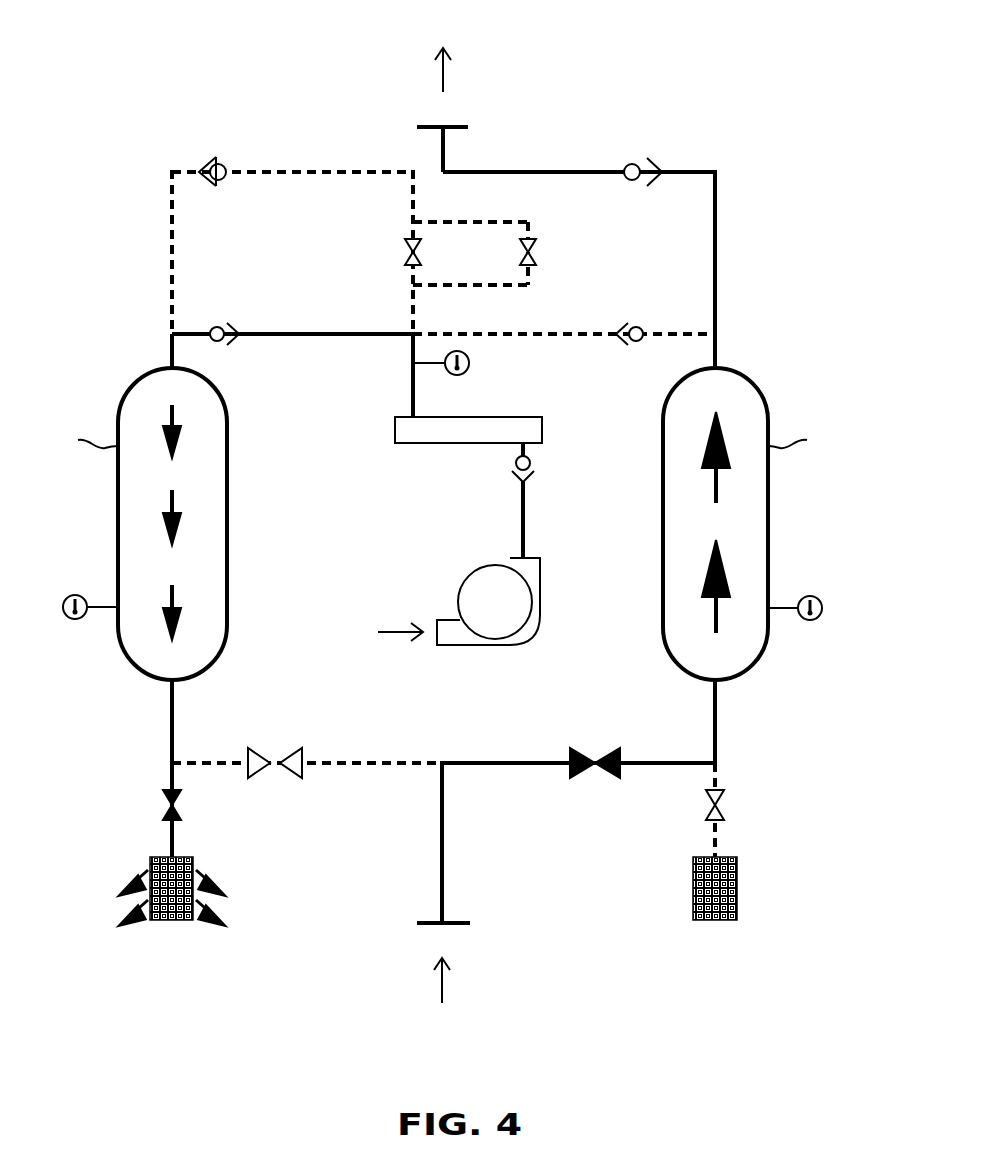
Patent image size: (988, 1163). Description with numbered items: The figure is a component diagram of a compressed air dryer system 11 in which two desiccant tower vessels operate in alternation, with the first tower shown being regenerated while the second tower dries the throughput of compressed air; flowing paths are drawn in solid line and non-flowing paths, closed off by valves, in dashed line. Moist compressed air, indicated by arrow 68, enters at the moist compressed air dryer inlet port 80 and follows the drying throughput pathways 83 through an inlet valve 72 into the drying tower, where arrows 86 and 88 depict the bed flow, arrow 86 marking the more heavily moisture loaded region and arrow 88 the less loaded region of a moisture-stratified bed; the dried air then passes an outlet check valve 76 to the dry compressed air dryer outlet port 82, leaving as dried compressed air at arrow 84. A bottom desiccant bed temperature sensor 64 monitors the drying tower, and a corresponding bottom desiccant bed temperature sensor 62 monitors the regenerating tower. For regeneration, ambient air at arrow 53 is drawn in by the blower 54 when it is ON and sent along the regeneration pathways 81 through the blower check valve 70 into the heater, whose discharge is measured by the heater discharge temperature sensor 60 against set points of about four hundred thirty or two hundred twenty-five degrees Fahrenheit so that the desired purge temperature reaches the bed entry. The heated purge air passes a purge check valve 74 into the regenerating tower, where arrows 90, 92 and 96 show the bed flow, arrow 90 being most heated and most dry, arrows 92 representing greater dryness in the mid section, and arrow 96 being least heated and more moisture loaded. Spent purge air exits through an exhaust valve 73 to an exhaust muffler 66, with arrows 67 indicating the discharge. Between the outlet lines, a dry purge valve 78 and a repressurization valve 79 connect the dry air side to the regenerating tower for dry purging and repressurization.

The dryer system 11 is at (90, 90).
The blower ambient air inlet arrow 53 is at (400, 642).
The blower 54 is at (460, 590).
The heater discharge temperature sensor 60 is at (470, 363).
The bottom desiccant bed temperature sensor for tower 'A' 62 is at (73, 622).
The bottom desiccant bed temperature sensor for tower 'B' 64 is at (818, 622).
The exhaust muffler 66 is at (175, 922).
The exhaust air flow 67 is at (125, 890).
The moist compressed air inflow arrow 68 is at (440, 990).
The blower check valve 70 is at (515, 478).
The inlet valve 72 is at (290, 748).
The exhaust valve 73 is at (165, 805).
The purge check valve 74 is at (230, 327).
The outlet check valve 76 is at (210, 184).
The dry purge valve 78 is at (405, 252).
The repressurization valve 79 is at (536, 253).
The moist compressed air dryer inlet port 80 is at (460, 925).
The regeneration pathway 81 is at (170, 334).
The dry compressed air dryer outlet port 82 is at (438, 126).
The drying throughput pathway 83 is at (565, 171).
The dried compressed air outflow arrow 84 is at (443, 80).
The drying tower 'B' bed flow arrow 86 is at (725, 570).
The drying tower 'B' bed flow arrow 88 is at (710, 445).
The regenerating tower 'A' bed flow arrow 90 is at (175, 418).
The regenerating tower 'A' mid-bed flow arrow 92 is at (172, 520).
The regenerating tower 'A' bed flow arrow 96 is at (175, 625).